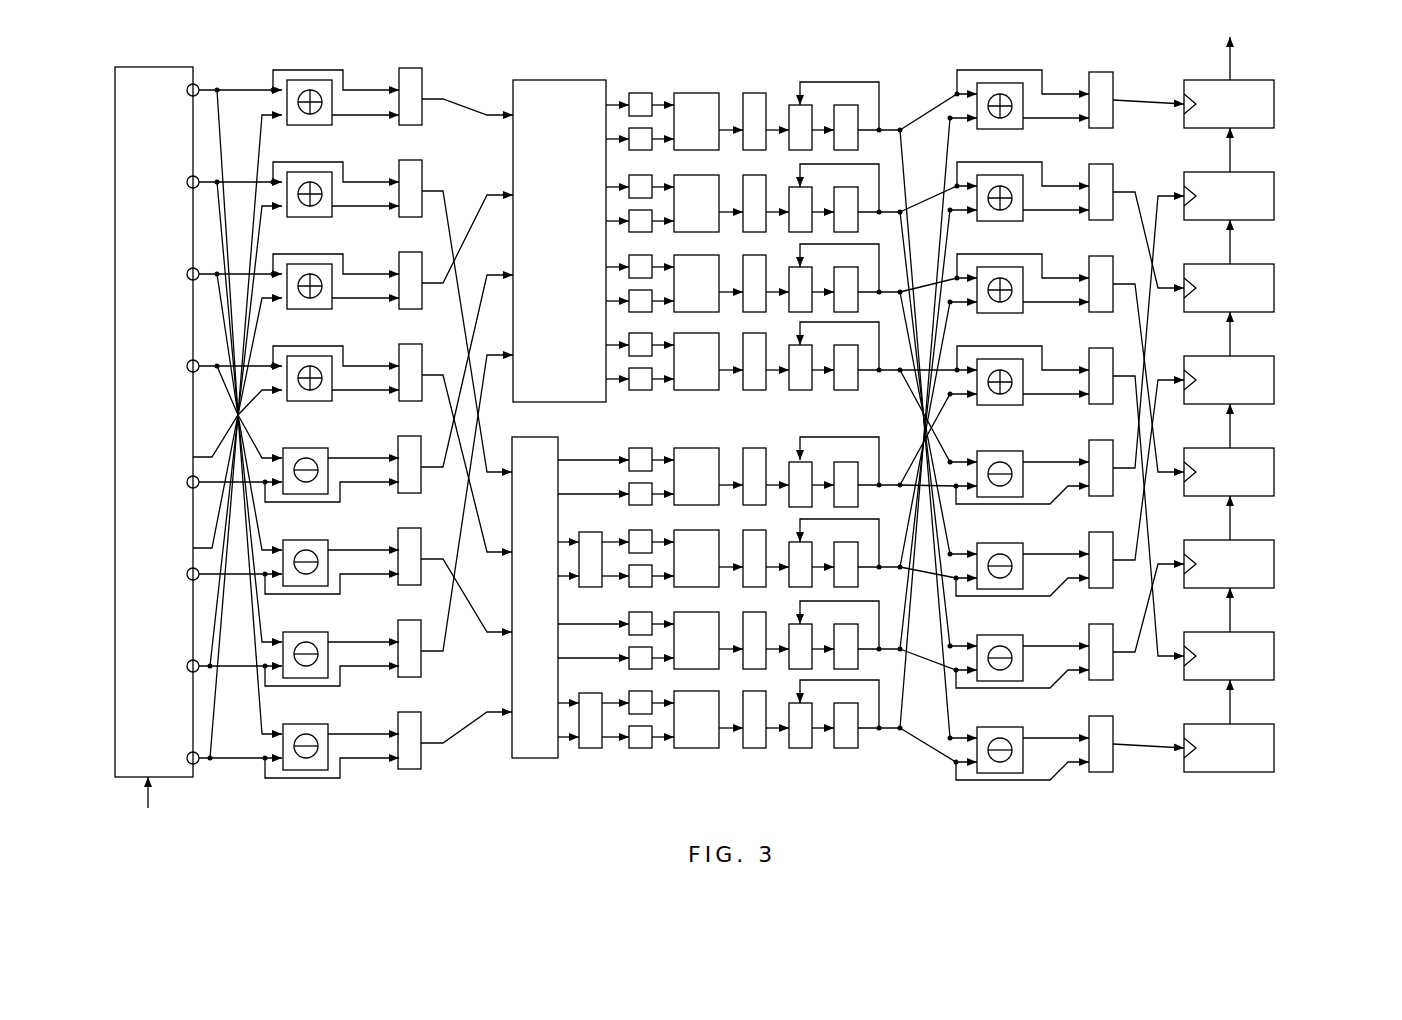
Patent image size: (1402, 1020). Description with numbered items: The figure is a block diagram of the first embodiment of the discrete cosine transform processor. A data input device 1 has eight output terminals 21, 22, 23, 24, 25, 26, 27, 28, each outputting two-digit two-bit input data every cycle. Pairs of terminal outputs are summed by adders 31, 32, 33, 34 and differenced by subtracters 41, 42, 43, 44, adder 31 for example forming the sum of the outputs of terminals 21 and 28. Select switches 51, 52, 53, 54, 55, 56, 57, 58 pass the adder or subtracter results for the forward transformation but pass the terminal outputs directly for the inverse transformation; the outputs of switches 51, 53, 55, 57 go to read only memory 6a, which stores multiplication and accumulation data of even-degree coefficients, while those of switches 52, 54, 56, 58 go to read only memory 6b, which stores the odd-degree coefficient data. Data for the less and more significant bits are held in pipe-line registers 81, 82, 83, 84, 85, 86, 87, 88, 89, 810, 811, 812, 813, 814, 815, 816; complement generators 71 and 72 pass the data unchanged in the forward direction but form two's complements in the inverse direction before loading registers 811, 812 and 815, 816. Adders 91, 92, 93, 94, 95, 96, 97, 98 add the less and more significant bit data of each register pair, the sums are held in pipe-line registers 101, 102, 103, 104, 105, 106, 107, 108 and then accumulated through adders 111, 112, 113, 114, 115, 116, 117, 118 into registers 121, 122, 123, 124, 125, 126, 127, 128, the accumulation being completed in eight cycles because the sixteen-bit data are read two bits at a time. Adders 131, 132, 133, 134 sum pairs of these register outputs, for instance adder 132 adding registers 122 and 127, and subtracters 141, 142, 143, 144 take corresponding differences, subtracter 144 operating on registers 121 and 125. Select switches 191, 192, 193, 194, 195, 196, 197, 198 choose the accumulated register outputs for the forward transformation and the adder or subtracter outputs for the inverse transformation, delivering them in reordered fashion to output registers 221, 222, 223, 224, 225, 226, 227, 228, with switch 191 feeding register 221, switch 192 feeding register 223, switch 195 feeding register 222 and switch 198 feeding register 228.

The data input device 1 is at (156, 67).
The output terminal 21 is at (199, 85).
The output terminal 22 is at (195, 176).
The output terminal 23 is at (195, 268).
The output terminal 24 is at (195, 360).
The output terminal 25 is at (193, 488).
The output terminal 26 is at (193, 580).
The output terminal 27 is at (193, 672).
The output terminal 28 is at (193, 764).
The adder 31 is at (306, 125).
The adder 32 is at (300, 217).
The adder 33 is at (300, 309).
The adder 34 is at (300, 401).
The subtracter 41 is at (306, 449).
The subtracter 42 is at (300, 541).
The subtracter 43 is at (298, 633).
The subtracter 44 is at (298, 725).
The select switch 51 is at (416, 76).
The select switch 52 is at (416, 168).
The select switch 53 is at (416, 262).
The select switch 54 is at (412, 352).
The select switch 55 is at (412, 444).
The select switch 56 is at (412, 536).
The select switch 57 is at (410, 628).
The select switch 58 is at (410, 720).
The read only memory 6a is at (547, 92).
The read only memory 6b is at (528, 462).
The complement generator 71 is at (586, 587).
The complement generator 72 is at (588, 750).
The pipe-line register 81 is at (641, 93).
The pipe-line register 82 is at (646, 150).
The pipe-line register 83 is at (633, 180).
The pipe-line register 84 is at (646, 232).
The pipe-line register 85 is at (633, 260).
The pipe-line register 86 is at (646, 312).
The pipe-line register 87 is at (633, 338).
The pipe-line register 88 is at (640, 390).
The pipe-line register 89 is at (636, 448).
The pipe-line register 810 is at (629, 494).
The pipe-line register 811 is at (634, 532).
The pipe-line register 812 is at (642, 587).
The pipe-line register 813 is at (638, 612).
The pipe-line register 814 is at (629, 658).
The pipe-line register 815 is at (634, 696).
The pipe-line register 816 is at (640, 750).
The adder 91 is at (695, 96).
The adder 92 is at (706, 180).
The adder 93 is at (706, 260).
The adder 94 is at (706, 338).
The adder 95 is at (690, 450).
The adder 96 is at (704, 534).
The adder 97 is at (704, 616).
The adder 98 is at (704, 696).
The pipe-line register 101 is at (754, 96).
The pipe-line register 102 is at (756, 180).
The pipe-line register 103 is at (756, 260).
The pipe-line register 104 is at (756, 338).
The pipe-line register 105 is at (754, 450).
The pipe-line register 106 is at (756, 534).
The pipe-line register 107 is at (756, 616).
The pipe-line register 108 is at (754, 696).
The adder 111 is at (805, 112).
The adder 112 is at (805, 196).
The adder 113 is at (805, 276).
The adder 114 is at (805, 354).
The adder 115 is at (805, 472).
The adder 116 is at (805, 552).
The adder 117 is at (805, 634).
The adder 118 is at (805, 714).
The register 121 is at (845, 112).
The register 122 is at (845, 196).
The register 123 is at (845, 276).
The register 124 is at (845, 354).
The register 125 is at (845, 472).
The register 126 is at (845, 552).
The register 127 is at (845, 634).
The register 128 is at (845, 714).
The adder 131 is at (1020, 128).
The adder 132 is at (1018, 221).
The adder 133 is at (1012, 313).
The adder 134 is at (1018, 405).
The subtracter 141 is at (1010, 452).
The subtracter 142 is at (1002, 543).
The subtracter 143 is at (1000, 635).
The subtracter 144 is at (1000, 727).
The select switch 191 is at (1113, 80).
The select switch 192 is at (1112, 180).
The select switch 193 is at (1100, 266).
The select switch 194 is at (1100, 358).
The select switch 195 is at (1100, 450).
The select switch 196 is at (1102, 542).
The select switch 197 is at (1102, 634).
The select switch 198 is at (1112, 728).
The output register 221 is at (1274, 104).
The output register 222 is at (1274, 196).
The output register 223 is at (1274, 288).
The output register 224 is at (1274, 380).
The output register 225 is at (1274, 472).
The output register 226 is at (1274, 564).
The output register 227 is at (1274, 656).
The output register 228 is at (1274, 748).